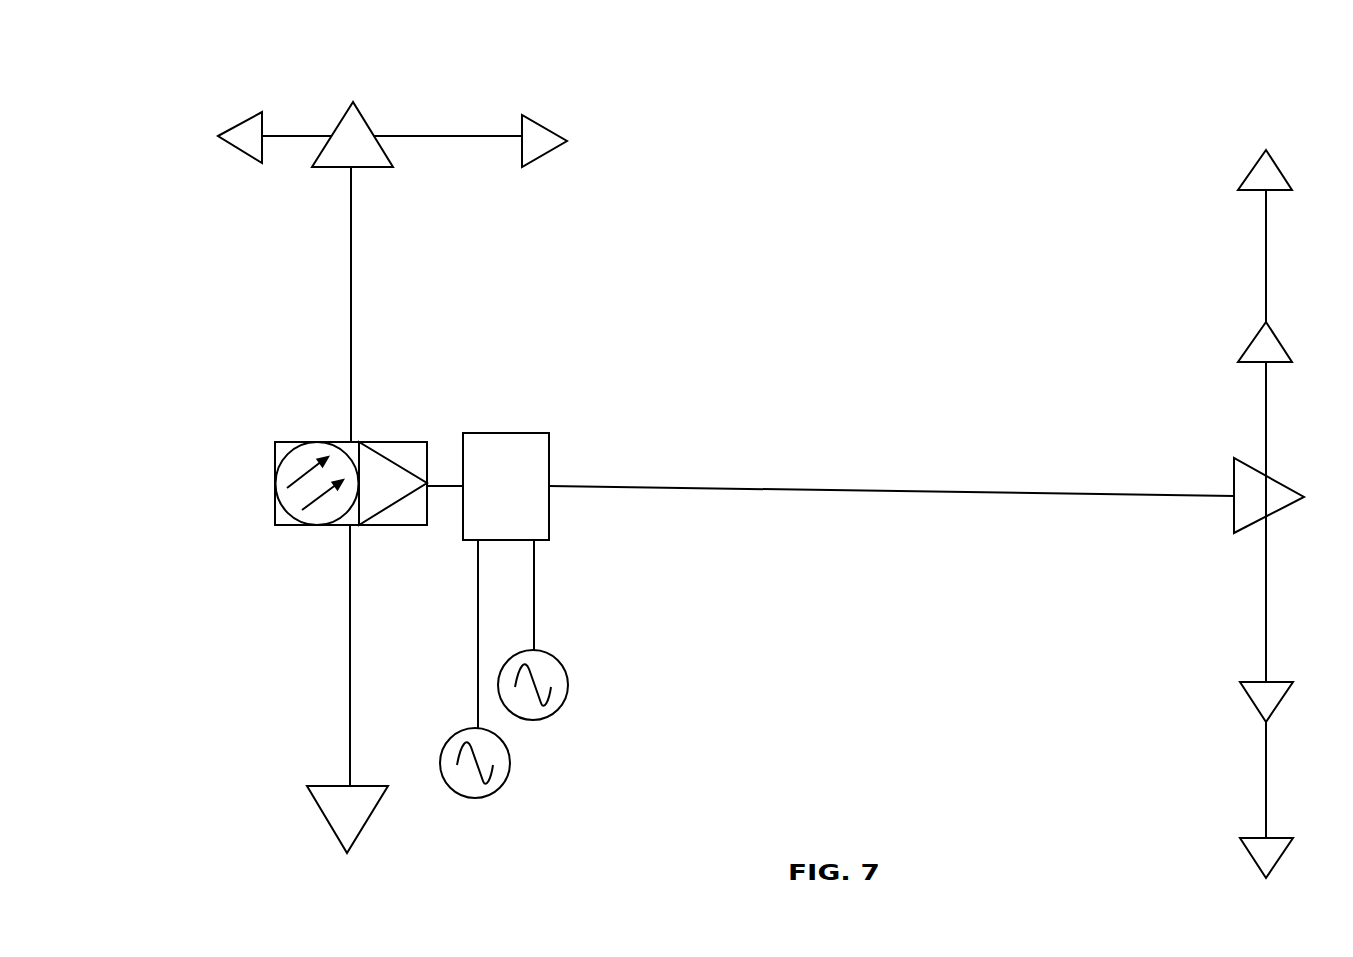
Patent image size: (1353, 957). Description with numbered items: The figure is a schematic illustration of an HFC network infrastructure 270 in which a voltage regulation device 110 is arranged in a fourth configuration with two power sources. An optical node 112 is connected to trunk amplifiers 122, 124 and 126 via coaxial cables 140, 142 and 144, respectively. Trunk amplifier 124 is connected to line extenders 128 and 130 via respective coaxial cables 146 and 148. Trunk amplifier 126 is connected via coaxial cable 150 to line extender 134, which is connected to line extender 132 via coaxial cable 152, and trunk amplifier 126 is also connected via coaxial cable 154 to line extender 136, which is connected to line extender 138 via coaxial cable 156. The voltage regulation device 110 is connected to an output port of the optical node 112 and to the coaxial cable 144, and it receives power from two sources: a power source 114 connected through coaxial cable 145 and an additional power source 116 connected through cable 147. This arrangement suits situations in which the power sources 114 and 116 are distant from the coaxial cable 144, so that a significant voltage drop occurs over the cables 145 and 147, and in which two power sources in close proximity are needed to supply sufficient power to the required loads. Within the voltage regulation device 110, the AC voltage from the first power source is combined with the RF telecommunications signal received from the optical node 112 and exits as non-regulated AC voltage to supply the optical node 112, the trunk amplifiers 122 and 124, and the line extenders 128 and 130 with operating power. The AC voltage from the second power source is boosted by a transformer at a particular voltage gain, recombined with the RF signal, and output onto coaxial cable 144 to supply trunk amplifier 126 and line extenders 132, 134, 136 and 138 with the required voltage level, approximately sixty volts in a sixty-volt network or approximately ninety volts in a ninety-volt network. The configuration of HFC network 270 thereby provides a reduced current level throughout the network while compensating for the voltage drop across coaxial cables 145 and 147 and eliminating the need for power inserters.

The HFC network infrastructure 270 is at (183, 79).
The voltage regulation device 110 is at (537, 432).
The optical node 112 is at (294, 441).
The power source 114 is at (510, 760).
The power source 116 is at (568, 682).
The trunk amplifier 122 is at (364, 108).
The trunk amplifier 124 is at (371, 821).
The trunk amplifier 126 is at (1295, 490).
The line extender 128 is at (247, 152).
The line extender 130 is at (545, 158).
The line extender 132 is at (1285, 172).
The line extender 134 is at (1285, 344).
The line extender 136 is at (1285, 696).
The line extender 138 is at (1285, 852).
The coaxial cable 140 is at (351, 289).
The coaxial cable 142 is at (350, 668).
The coaxial cable 144 is at (928, 490).
The coaxial cable 145 is at (477, 607).
The coaxial cable 146 is at (284, 134).
The cable 147 is at (534, 593).
The coaxial cable 148 is at (482, 135).
The coaxial cable 150 is at (1266, 403).
The coaxial cable 152 is at (1266, 264).
The coaxial cable 154 is at (1266, 609).
The coaxial cable 156 is at (1266, 789).